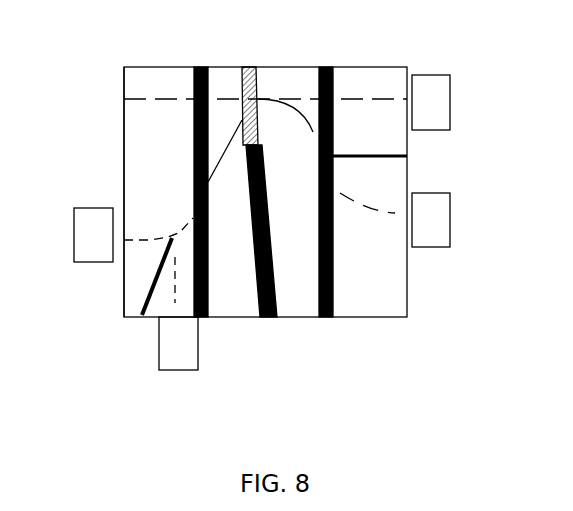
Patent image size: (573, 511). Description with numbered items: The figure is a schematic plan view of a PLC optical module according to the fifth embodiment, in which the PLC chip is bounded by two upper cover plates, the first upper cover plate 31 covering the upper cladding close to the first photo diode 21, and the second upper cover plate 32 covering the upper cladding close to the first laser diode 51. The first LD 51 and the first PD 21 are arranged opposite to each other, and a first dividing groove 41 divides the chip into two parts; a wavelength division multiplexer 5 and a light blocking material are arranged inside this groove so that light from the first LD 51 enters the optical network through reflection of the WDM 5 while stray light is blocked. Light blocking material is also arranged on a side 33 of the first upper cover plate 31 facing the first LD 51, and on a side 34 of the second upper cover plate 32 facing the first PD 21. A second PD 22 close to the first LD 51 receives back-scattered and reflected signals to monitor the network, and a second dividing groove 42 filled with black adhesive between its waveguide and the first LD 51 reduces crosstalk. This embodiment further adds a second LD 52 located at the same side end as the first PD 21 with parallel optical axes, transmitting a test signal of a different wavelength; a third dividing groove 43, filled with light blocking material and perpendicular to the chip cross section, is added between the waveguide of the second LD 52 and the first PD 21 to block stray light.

The wavelength division multiplexer 5 is at (245, 68).
The first photo diode 21 is at (450, 97).
The second photo diode 22 is at (178, 370).
The first upper cover plate 31 is at (385, 255).
The second upper cover plate 32 is at (124, 122).
The side of the first upper cover plate 33 is at (335, 283).
The side of the second upper cover plate 34 is at (193, 90).
The first dividing groove 41 is at (273, 320).
The second dividing groove 42 is at (170, 240).
The third dividing groove 43 is at (383, 157).
The first laser diode 51 is at (74, 232).
The second laser diode 52 is at (450, 212).